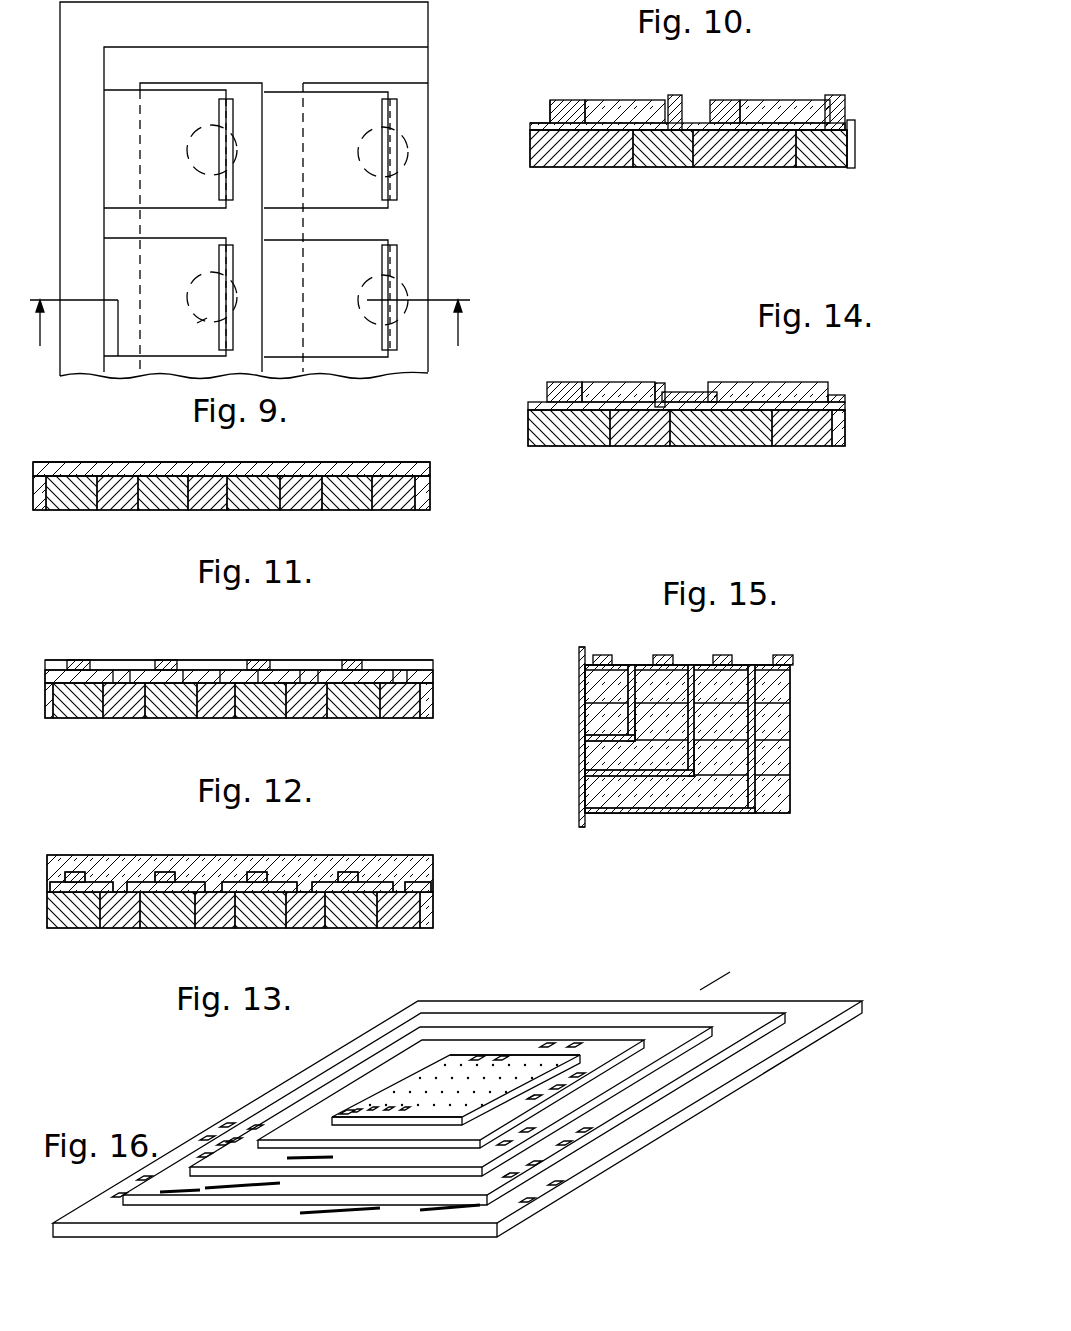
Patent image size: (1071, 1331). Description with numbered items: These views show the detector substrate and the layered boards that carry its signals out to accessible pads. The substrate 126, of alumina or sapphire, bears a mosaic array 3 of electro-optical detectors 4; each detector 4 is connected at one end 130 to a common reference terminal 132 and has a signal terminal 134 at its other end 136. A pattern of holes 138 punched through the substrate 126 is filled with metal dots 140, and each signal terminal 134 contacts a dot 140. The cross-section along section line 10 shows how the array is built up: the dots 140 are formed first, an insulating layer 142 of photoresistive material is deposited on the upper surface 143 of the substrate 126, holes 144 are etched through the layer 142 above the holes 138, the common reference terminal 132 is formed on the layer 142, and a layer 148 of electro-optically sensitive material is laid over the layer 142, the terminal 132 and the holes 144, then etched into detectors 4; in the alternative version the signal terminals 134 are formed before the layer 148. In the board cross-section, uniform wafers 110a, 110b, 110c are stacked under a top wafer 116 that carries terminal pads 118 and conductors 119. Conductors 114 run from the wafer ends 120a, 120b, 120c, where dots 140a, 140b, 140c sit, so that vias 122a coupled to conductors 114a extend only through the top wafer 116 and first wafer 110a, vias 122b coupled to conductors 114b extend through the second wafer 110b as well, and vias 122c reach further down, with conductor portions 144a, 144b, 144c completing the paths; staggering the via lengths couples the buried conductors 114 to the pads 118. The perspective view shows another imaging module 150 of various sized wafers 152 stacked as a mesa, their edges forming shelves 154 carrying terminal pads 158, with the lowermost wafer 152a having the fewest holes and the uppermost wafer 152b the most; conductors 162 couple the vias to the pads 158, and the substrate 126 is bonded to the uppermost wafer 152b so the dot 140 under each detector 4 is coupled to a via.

In FIG. 9, the mosaic array 3 is at (168, 332).
In FIG. 10, the mosaic array 3 is at (739, 91).
In FIG. 16, the mosaic array 3 is at (504, 1054).
In FIG. 9, the electro-optical detector 4 is at (184, 164).
In FIG. 10, the electro-optical detector 4 is at (616, 100).
In FIG. 14, the electro-optical detector 4 is at (618, 383).
In FIG. 16, the electro-optical detector 4 is at (346, 1118).
In FIG. 9, the section line 10 is at (248, 334).
In FIG. 15, the first wafer 110a is at (781, 725).
In FIG. 15, the second wafer 110b is at (776, 763).
In FIG. 15, the third wafer 110c is at (779, 797).
In FIG. 15, the electrical conductor 114 is at (589, 665).
In FIG. 15, the conductor 114a is at (612, 742).
In FIG. 15, the conductor 114b is at (650, 778).
In FIG. 15, the top wafer 116 is at (783, 693).
In FIG. 15, the terminal pad 118 is at (656, 655).
In FIG. 15, the conductor 119 is at (706, 657).
In FIG. 15, the end of first wafer 120a is at (582, 704).
In FIG. 15, the end of second wafer 120b is at (585, 752).
In FIG. 15, the end of third wafer 120c is at (598, 816).
In FIG. 15, the via 122a is at (633, 680).
In FIG. 15, the via 122b is at (690, 680).
In FIG. 15, the via 122c is at (753, 690).
In FIG. 9, the substrate 126 is at (345, 37).
In FIG. 10, the substrate 126 is at (580, 150).
In FIG. 14, the substrate 126 is at (560, 435).
In FIG. 11, the substrate 126 is at (180, 501).
In FIG. 12, the substrate 126 is at (75, 712).
In FIG. 13, the substrate 126 is at (74, 920).
In FIG. 15, the substrate 126 is at (581, 646).
In FIG. 16, the substrate 126 is at (581, 1055).
In FIG. 9, the detector end 130 is at (283, 192).
In FIG. 10, the detector end 130 is at (550, 108).
In FIG. 9, the common reference terminal 132 is at (310, 74).
In FIG. 10, the common reference terminal 132 is at (567, 113).
In FIG. 14, the common reference terminal 132 is at (560, 393).
In FIG. 12, the common reference terminal 132 is at (258, 670).
In FIG. 13, the common reference terminal 132 is at (258, 872).
In FIG. 9, the signal terminal 134 is at (398, 146).
In FIG. 10, the signal terminal 134 is at (681, 104).
In FIG. 14, the signal terminal 134 is at (655, 390).
In FIG. 9, the detector end 136 is at (392, 242).
In FIG. 10, the detector end 136 is at (672, 104).
In FIG. 9, the hole 138 is at (205, 325).
In FIG. 10, the hole 138 is at (630, 145).
In FIG. 14, the hole 138 is at (672, 432).
In FIG. 11, the hole 138 is at (92, 497).
In FIG. 12, the hole 138 is at (272, 713).
In FIG. 13, the hole 138 is at (189, 922).
In FIG. 9, the metal dot 140 is at (400, 111).
In FIG. 10, the metal dot 140 is at (667, 160).
In FIG. 14, the metal dot 140 is at (636, 437).
In FIG. 11, the metal dot 140 is at (120, 497).
In FIG. 12, the metal dot 140 is at (128, 712).
In FIG. 13, the metal dot 140 is at (226, 918).
In FIG. 15, the metal dot 140 is at (579, 665).
In FIG. 15, the dot 140a is at (581, 736).
In FIG. 15, the dot 140b is at (583, 772).
In FIG. 15, the dot 140c is at (581, 802).
In FIG. 10, the insulating layer 142 is at (755, 128).
In FIG. 14, the insulating layer 142 is at (545, 403).
In FIG. 11, the insulating layer 142 is at (362, 470).
In FIG. 12, the insulating layer 142 is at (433, 684).
In FIG. 13, the insulating layer 142 is at (375, 884).
In FIG. 11, the upper surface 143 is at (276, 472).
In FIG. 12, the upper surface 143 is at (433, 667).
In FIG. 12, the hole 144 is at (122, 672).
In FIG. 15, the conductive layer 144a is at (610, 738).
In FIG. 15, the conductive layer 144b is at (639, 773).
In FIG. 15, the conductive layer 144c is at (688, 815).
In FIG. 13, the electrooptically sensitive layer 148 is at (426, 870).
In FIG. 16, the imaging module 150 is at (702, 987).
In FIG. 16, the wafer 152 is at (851, 1017).
In FIG. 16, the lowermost wafer 152a is at (690, 1112).
In FIG. 16, the uppermost wafer 152b is at (439, 1146).
In FIG. 16, the shelf 154 is at (308, 1107).
In FIG. 16, the terminal pad 158 is at (594, 1130).
In FIG. 16, the conductor 162 is at (528, 1183).